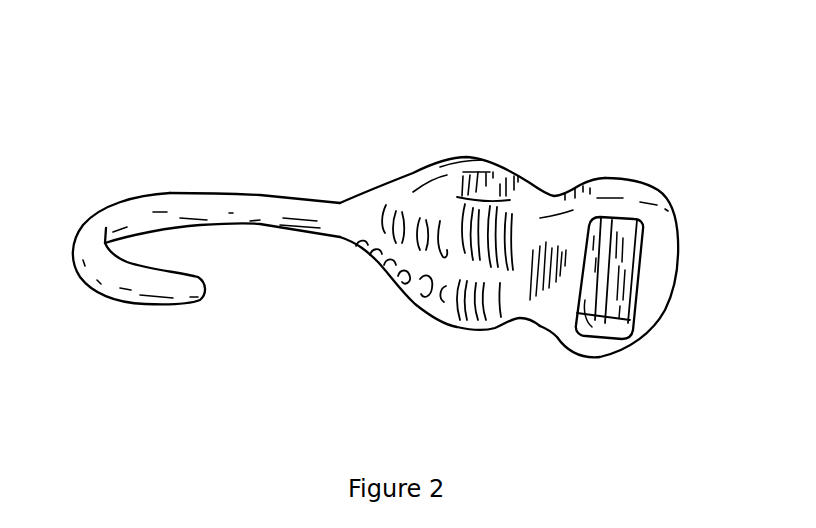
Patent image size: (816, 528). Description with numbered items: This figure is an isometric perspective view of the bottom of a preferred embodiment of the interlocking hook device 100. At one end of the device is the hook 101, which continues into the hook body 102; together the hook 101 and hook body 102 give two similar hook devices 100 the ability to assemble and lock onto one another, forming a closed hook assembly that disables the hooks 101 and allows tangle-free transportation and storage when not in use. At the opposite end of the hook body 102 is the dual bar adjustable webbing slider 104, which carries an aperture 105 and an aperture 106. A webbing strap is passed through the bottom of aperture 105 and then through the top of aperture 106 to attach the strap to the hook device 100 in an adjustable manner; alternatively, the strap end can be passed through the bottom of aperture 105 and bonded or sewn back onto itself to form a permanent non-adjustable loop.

The interlocking hook device 100 is at (417, 219).
The hook 101 is at (140, 203).
The hook body 102 is at (448, 262).
The dual bar adjustable webbing slider 104 is at (623, 205).
The aperture 105 is at (582, 298).
The aperture 106 is at (635, 272).